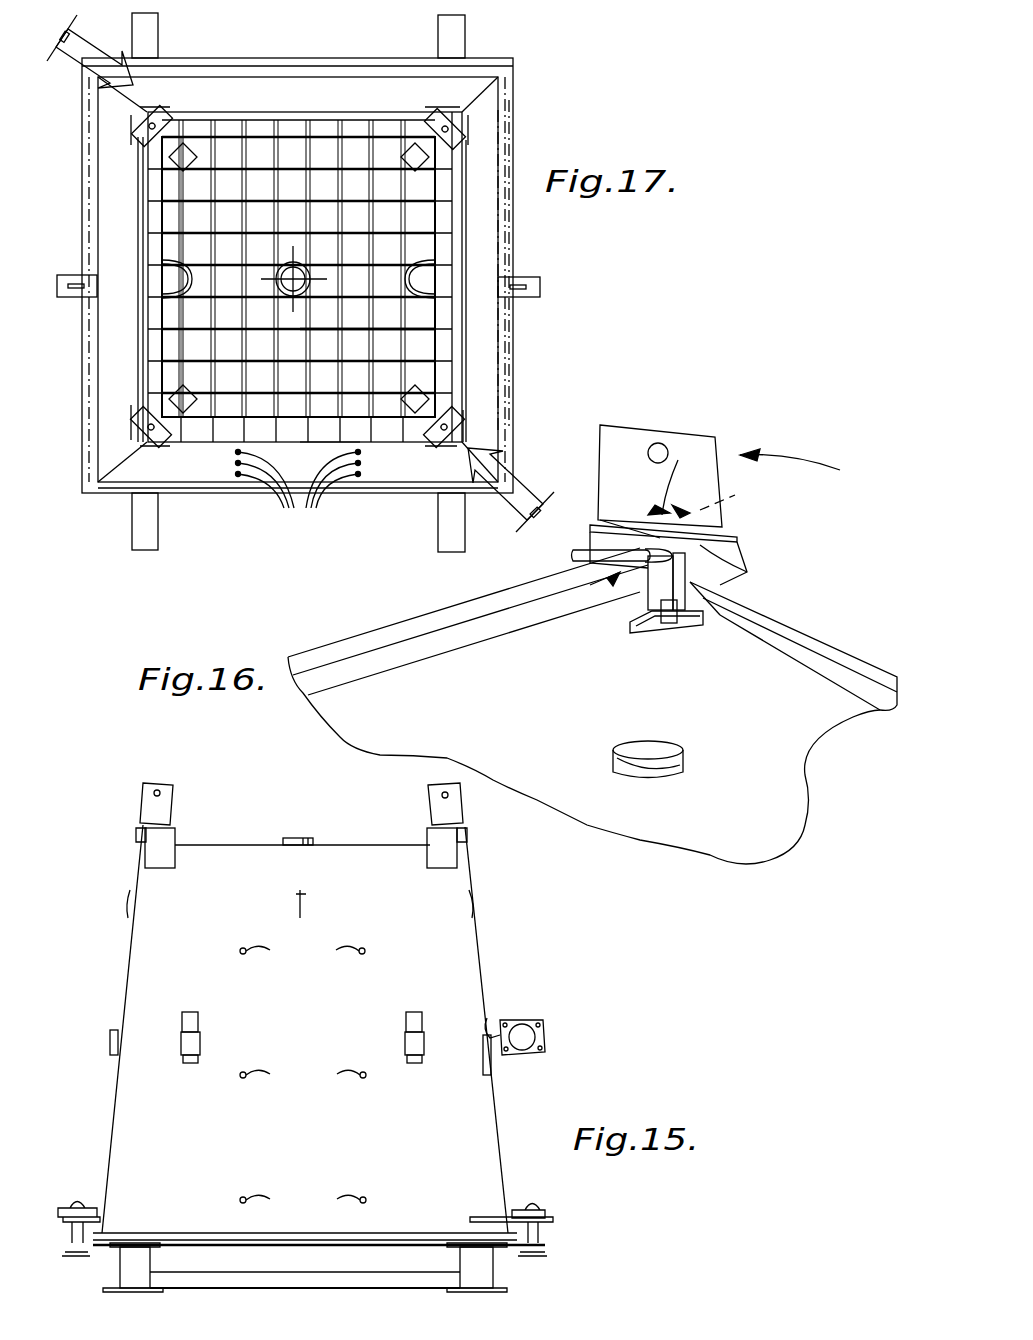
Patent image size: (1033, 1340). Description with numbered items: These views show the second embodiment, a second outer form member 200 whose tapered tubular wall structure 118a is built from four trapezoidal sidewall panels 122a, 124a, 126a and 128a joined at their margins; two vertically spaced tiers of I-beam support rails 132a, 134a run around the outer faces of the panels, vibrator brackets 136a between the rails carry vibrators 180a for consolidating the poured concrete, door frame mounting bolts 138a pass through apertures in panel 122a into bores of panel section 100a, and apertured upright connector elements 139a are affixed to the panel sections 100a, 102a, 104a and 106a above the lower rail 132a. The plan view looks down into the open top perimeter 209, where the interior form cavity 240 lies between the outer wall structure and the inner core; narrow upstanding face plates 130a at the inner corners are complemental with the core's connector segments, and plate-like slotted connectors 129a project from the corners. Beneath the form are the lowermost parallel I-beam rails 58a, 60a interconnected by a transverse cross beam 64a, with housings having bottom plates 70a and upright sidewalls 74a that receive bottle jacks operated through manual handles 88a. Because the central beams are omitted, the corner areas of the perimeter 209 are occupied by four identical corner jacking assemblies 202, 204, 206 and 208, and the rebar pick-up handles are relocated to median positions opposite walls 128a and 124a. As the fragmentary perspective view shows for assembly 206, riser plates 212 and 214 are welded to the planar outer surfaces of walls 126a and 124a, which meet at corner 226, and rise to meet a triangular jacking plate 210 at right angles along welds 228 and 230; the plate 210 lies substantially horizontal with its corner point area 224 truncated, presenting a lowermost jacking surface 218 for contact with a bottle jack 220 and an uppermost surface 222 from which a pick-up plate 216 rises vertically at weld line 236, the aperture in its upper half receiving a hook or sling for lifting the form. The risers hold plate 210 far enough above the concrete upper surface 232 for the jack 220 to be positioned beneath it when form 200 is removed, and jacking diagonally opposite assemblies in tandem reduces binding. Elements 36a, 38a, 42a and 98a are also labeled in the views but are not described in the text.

In FIG. 16, the drain opening 36a is at (670, 742).
In FIG. 15, the drain opening 36a is at (300, 838).
In FIG. 17, the hook 38a is at (165, 312).
In FIG. 17, the corner gusset 42a is at (440, 310).
In FIG. 17, the I-beam rail 58a is at (450, 43).
In FIG. 17, the I-beam rail 60a is at (146, 40).
In FIG. 15, the I-beam rail 60a is at (140, 1260).
In FIG. 15, the transverse cross beam 64a is at (380, 1280).
In FIG. 15, the bottom plate 70a is at (125, 1291).
In FIG. 15, the sidewall 74a is at (122, 1267).
In FIG. 15, the manual handle 88a is at (545, 1256).
In FIG. 17, the side rail 98a is at (390, 222).
In FIG. 17, the panel section 100a is at (210, 430).
In FIG. 17, the panel section 102a is at (450, 330).
In FIG. 17, the panel section 104a is at (300, 128).
In FIG. 17, the panel section 106a is at (152, 215).
In FIG. 17, the sidewall assembly 118a is at (100, 498).
In FIG. 15, the sidewall assembly 118a is at (375, 868).
In FIG. 17, the sidewall panel 122a is at (240, 448).
In FIG. 15, the sidewall panel 122a is at (478, 1128).
In FIG. 17, the sidewall panel 124a is at (460, 345).
In FIG. 16, the sidewall panel 124a is at (800, 630).
In FIG. 17, the sidewall panel 126a is at (330, 128).
In FIG. 16, the sidewall panel 126a is at (455, 625).
In FIG. 17, the sidewall panel 128a is at (140, 242).
In FIG. 15, the slotted connector 129a is at (100, 1210).
In FIG. 17, the face plate 130a is at (300, 262).
In FIG. 17, the I-beam support rail 132a is at (478, 205).
In FIG. 17, the I-beam support rail 134a is at (509, 145).
In FIG. 15, the vibrator bracket 136a is at (200, 1027).
In FIG. 17, the door frame mounting bolt 138a is at (298, 491).
In FIG. 15, the door frame mounting bolt 138a is at (303, 1074).
In FIG. 15, the connector element 139a is at (128, 905).
In FIG. 15, the vibrator 180a is at (525, 1018).
In FIG. 15, the second outer form member 200 is at (466, 993).
In FIG. 17, the corner jacking assembly 202 is at (140, 437).
In FIG. 15, the corner jacking assembly 202 is at (160, 805).
In FIG. 17, the corner jacking assembly 204 is at (468, 432).
In FIG. 15, the corner jacking assembly 204 is at (447, 820).
In FIG. 17, the corner jacking assembly 206 is at (455, 108).
In FIG. 16, the corner jacking assembly 206 is at (770, 512).
In FIG. 17, the corner jacking assembly 208 is at (160, 108).
In FIG. 17, the open top perimeter 209 is at (128, 386).
In FIG. 16, the open top perimeter 209 is at (385, 633).
In FIG. 16, the jacking plate 210 is at (740, 550).
In FIG. 16, the riser plate 212 is at (737, 565).
In FIG. 16, the riser plate 214 is at (575, 550).
In FIG. 16, the pick-up plate 216 is at (630, 430).
In FIG. 16, the jacking surface 218 is at (730, 600).
In FIG. 16, the bottle jack 220 is at (635, 620).
In FIG. 16, the uppermost surface 222 is at (600, 522).
In FIG. 16, the corner point area 224 is at (715, 490).
In FIG. 16, the corner 226 is at (588, 584).
In FIG. 16, the weld 228 is at (620, 512).
In FIG. 16, the weld 230 is at (715, 515).
In FIG. 16, the concrete upper surface 232 is at (575, 692).
In FIG. 16, the weld line 236 is at (680, 458).
In FIG. 17, the interior form cavity 240 is at (400, 282).
In FIG. 16, the interior form cavity 240 is at (778, 710).